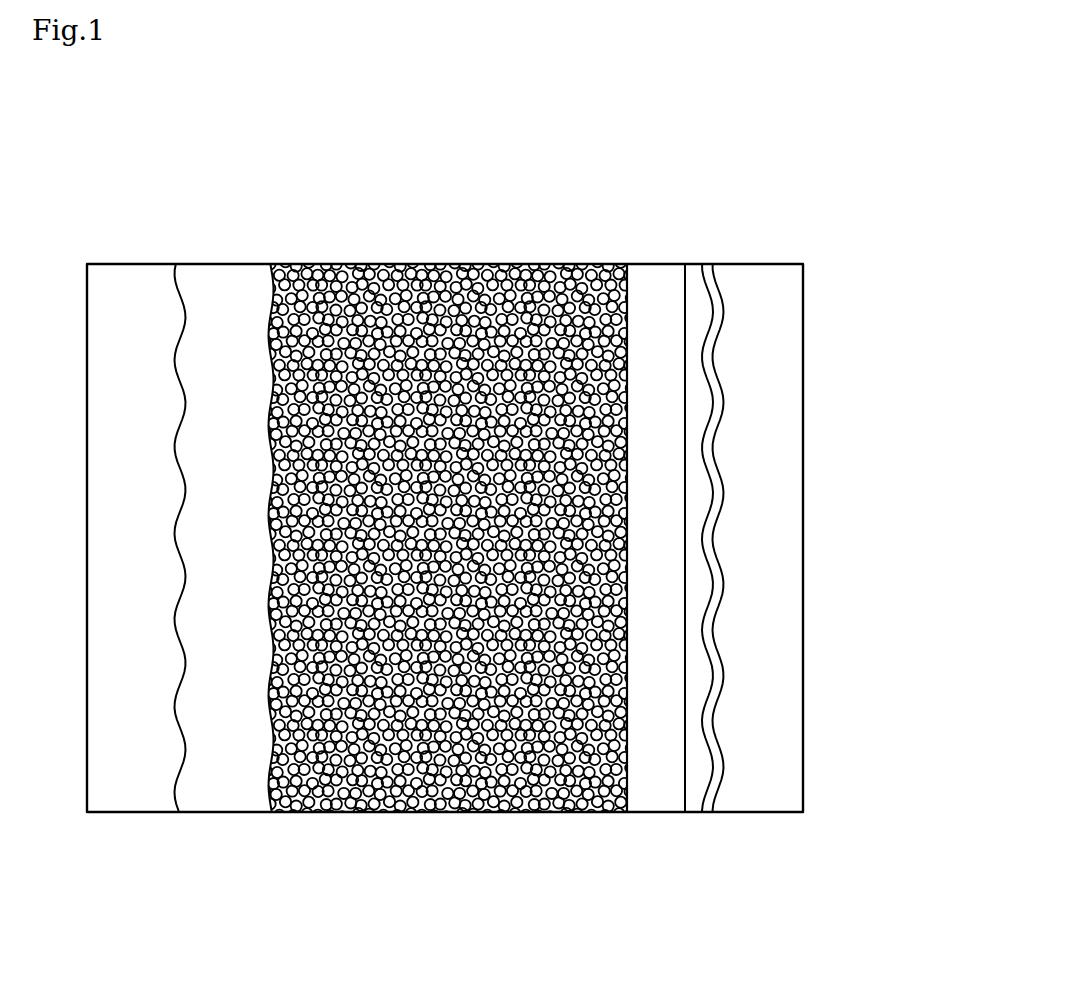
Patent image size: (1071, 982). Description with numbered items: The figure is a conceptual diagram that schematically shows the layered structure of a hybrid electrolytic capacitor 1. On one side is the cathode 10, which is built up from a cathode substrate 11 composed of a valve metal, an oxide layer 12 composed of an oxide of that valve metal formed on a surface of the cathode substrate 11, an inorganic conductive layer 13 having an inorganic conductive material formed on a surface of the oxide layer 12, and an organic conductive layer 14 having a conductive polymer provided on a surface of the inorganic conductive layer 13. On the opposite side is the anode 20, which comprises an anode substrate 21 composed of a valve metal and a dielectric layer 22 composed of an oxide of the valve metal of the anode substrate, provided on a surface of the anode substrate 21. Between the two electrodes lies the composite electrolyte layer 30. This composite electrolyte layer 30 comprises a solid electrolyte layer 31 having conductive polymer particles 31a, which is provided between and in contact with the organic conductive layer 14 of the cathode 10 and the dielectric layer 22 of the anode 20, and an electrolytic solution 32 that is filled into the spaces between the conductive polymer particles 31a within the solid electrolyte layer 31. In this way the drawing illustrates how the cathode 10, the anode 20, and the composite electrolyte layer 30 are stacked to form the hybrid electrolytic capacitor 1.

The hybrid electrolytic capacitor 1 is at (843, 310).
The cathode 10 is at (713, 479).
The cathode substrate 11 is at (760, 515).
The oxide layer 12 is at (713, 277).
The inorganic conductive layer 13 is at (699, 298).
The organic conductive layer 14 is at (651, 302).
The anode 20 is at (179, 475).
The anode substrate 21 is at (123, 305).
The dielectric layer 22 is at (226, 507).
The composite electrolyte layer 30 is at (419, 605).
The solid electrolyte layer 31 is at (419, 574).
The conductive polymer particles 31a is at (244, 573).
The electrolytic solution 32 is at (553, 798).